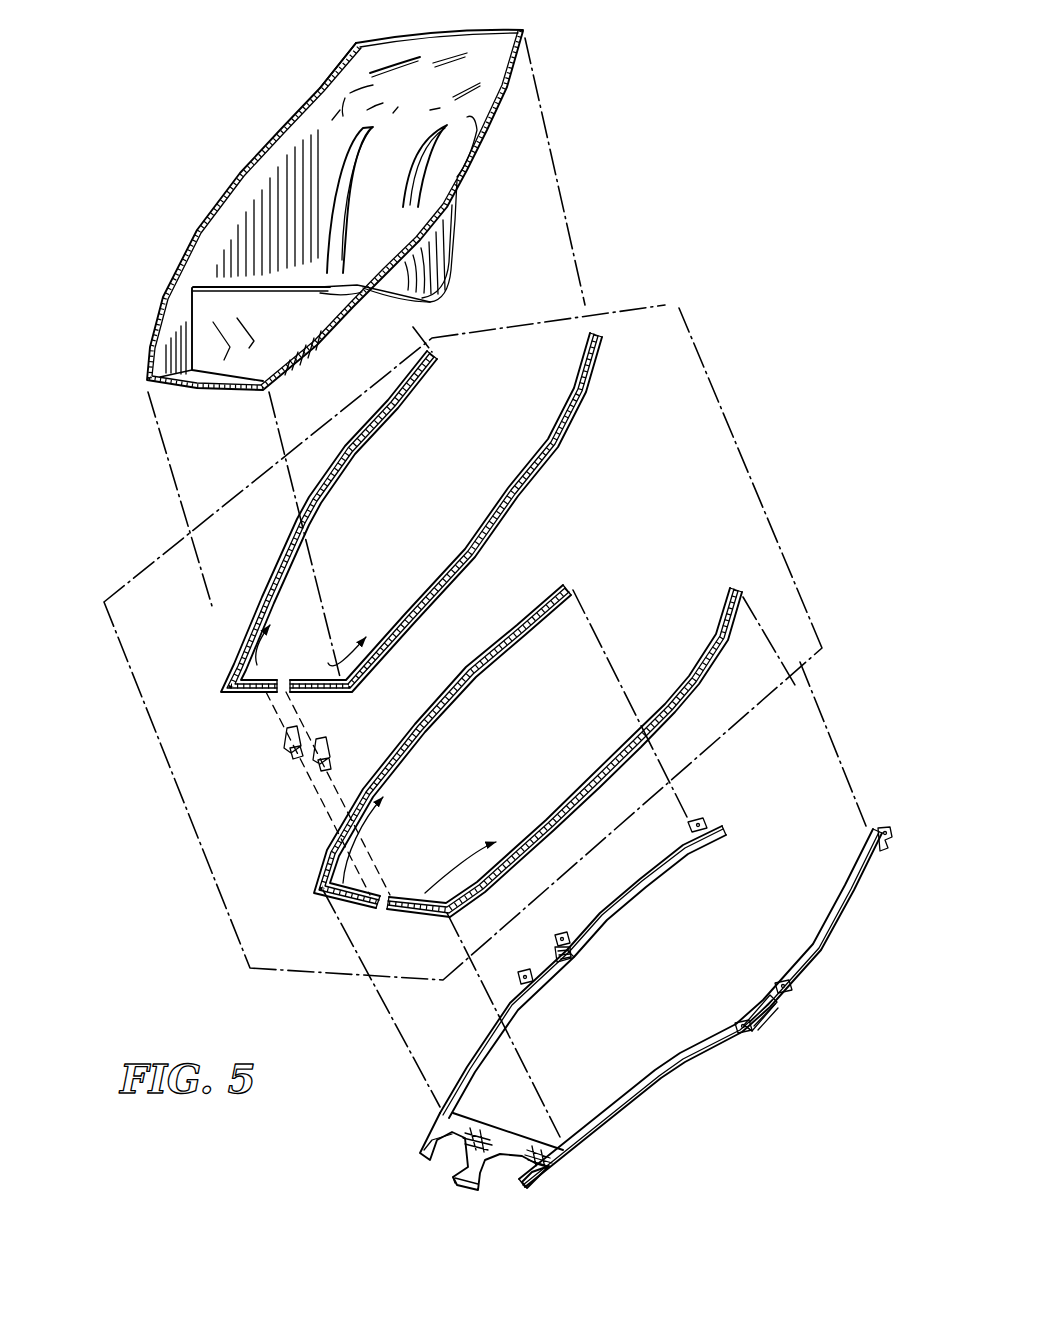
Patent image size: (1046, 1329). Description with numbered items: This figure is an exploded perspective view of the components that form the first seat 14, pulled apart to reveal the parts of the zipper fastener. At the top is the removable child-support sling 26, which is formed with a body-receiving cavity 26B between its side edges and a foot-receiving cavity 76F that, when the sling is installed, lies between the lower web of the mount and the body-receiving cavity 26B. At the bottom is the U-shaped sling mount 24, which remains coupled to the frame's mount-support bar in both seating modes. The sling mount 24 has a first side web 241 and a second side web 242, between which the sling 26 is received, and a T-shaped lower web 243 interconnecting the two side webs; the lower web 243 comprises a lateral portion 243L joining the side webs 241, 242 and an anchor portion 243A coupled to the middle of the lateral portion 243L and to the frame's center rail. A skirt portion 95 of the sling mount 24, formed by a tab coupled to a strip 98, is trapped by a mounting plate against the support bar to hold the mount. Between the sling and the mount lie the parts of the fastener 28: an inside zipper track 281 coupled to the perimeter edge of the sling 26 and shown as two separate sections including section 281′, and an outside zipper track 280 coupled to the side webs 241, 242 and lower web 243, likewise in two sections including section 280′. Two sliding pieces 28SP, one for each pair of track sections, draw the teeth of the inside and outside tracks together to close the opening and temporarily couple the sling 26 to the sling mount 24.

The first seat 14 is at (672, 231).
The removable child-support sling 26 is at (490, 147).
The body-receiving cavity 26B is at (325, 168).
The foot-receiving cavity 76F is at (203, 310).
The fastener 28 is at (747, 447).
The inside zipper track 281 is at (445, 363).
The inside zipper track section 281′ is at (507, 508).
The outside zipper track 280 is at (578, 588).
The outside zipper track section 280′ is at (549, 827).
The sliding piece 28SP is at (285, 735).
The sling mount 24 is at (877, 808).
The first side web 241 is at (662, 1081).
The second side web 242 is at (518, 1022).
The lower web 243 is at (507, 1120).
The lateral portion 243L is at (452, 1130).
The anchor portion 243A is at (483, 1160).
The skirt portion 95 is at (703, 820).
The strip 98 is at (584, 922).